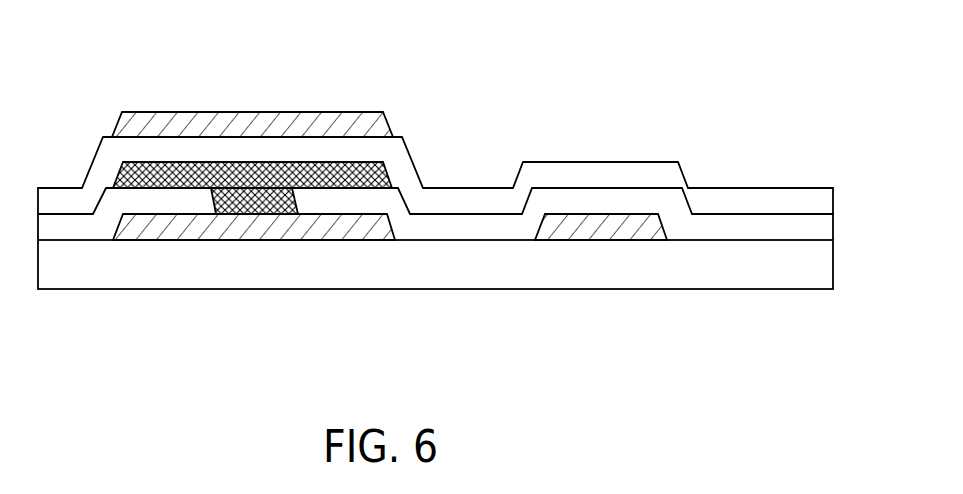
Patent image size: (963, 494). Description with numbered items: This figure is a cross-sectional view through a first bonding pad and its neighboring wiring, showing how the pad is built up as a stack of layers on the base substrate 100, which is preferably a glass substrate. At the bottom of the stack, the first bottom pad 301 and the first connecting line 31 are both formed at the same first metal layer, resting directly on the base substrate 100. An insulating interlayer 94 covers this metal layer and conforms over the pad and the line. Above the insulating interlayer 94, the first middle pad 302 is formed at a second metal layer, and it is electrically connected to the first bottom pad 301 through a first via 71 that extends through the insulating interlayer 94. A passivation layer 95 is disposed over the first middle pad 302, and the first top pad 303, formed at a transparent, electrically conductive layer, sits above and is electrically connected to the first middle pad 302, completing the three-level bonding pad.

The base substrate 100 is at (803, 272).
The insulating interlayer 94 is at (802, 229).
The passivation layer 95 is at (790, 199).
The first bottom pad 301 is at (124, 231).
The first middle pad 302 is at (357, 167).
The first top pad 303 is at (197, 123).
The first connecting line 31 is at (615, 218).
The first via 71 is at (295, 200).